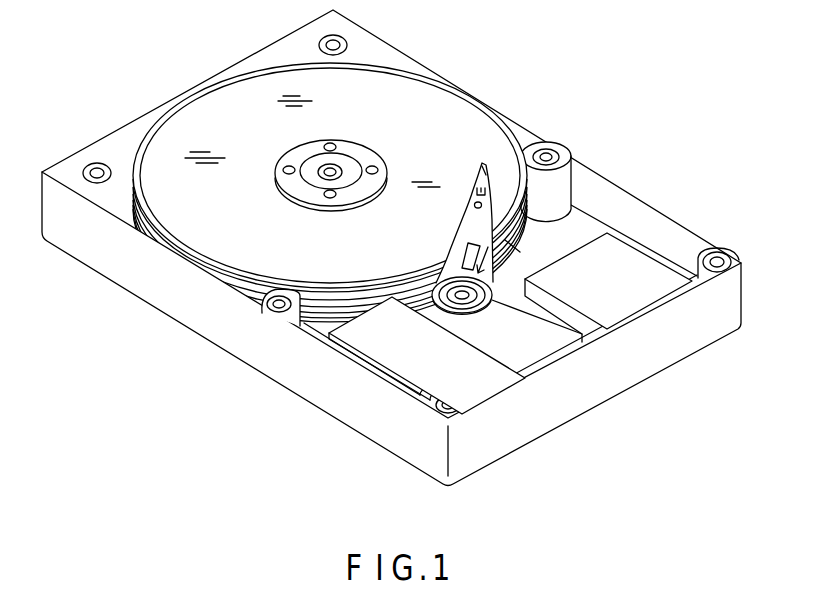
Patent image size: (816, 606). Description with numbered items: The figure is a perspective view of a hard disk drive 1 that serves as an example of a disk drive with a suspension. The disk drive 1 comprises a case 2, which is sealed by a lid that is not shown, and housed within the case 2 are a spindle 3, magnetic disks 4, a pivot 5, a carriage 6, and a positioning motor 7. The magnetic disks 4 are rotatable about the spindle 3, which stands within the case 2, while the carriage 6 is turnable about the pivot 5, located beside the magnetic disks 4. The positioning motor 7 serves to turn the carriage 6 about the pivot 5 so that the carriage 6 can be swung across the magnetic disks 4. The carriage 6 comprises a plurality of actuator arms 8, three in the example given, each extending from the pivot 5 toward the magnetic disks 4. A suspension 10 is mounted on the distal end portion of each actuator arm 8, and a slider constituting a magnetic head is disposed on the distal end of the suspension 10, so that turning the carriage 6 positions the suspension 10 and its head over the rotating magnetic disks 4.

The disk drive 1 is at (646, 91).
The case 2 is at (210, 330).
The spindle 3 is at (343, 162).
The magnetic disks 4 is at (430, 110).
The pivot 5 is at (478, 308).
The carriage 6 is at (516, 247).
The positioning motor 7 is at (397, 365).
The actuator arm 8 is at (484, 223).
The suspension 10 is at (485, 166).